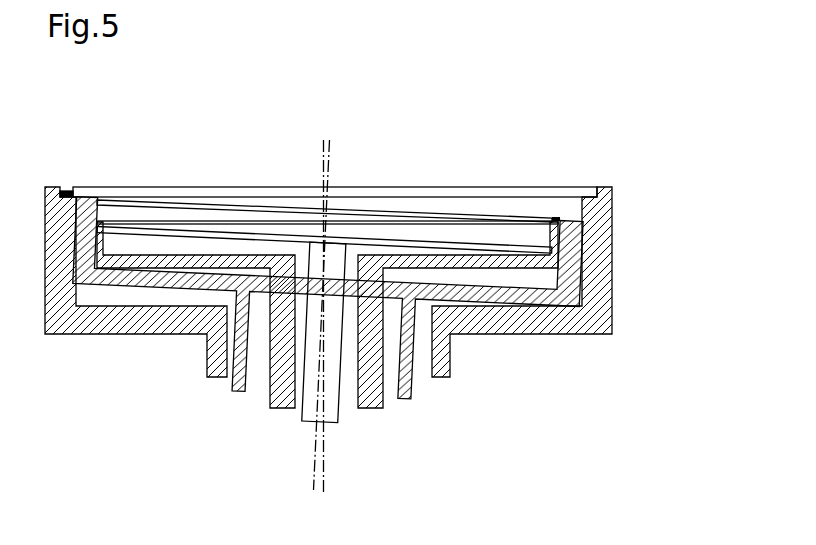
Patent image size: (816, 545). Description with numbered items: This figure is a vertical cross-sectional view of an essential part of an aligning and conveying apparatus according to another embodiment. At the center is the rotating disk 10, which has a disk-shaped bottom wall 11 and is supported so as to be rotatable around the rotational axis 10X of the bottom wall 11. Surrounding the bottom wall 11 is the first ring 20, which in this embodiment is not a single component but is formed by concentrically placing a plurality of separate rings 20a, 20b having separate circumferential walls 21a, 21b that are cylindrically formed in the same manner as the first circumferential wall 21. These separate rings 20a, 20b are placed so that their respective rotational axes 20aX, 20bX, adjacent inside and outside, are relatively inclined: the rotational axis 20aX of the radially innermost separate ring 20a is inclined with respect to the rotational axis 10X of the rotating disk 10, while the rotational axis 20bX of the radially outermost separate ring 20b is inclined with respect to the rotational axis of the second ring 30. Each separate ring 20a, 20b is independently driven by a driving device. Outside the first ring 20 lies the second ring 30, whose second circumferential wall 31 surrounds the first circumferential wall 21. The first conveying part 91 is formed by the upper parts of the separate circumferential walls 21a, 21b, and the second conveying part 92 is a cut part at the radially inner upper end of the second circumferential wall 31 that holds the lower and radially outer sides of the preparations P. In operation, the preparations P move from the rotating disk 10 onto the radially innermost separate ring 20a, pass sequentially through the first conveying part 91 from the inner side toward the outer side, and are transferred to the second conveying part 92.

The rotating disk 10 is at (323, 272).
The bottom wall 11 is at (413, 242).
The first ring 20 is at (333, 319).
The radially innermost separate ring 20a is at (384, 311).
The radially outermost separate ring 20b is at (415, 360).
The first circumferential wall 21 is at (412, 255).
The separate circumferential wall 21a is at (559, 226).
The separate circumferential wall 21b is at (563, 238).
The second ring 30 is at (358, 288).
The second circumferential wall 31 is at (603, 227).
The first conveying part 91 is at (558, 218).
The second conveying part 92 is at (476, 188).
The preparations P is at (67, 190).
The rotational axis of the rotating disk 10X is at (245, 315).
The rotational axis of the radially outermost separate ring 20bX is at (316, 443).
The rotational axis of the radially innermost separate ring 20aX is at (397, 317).